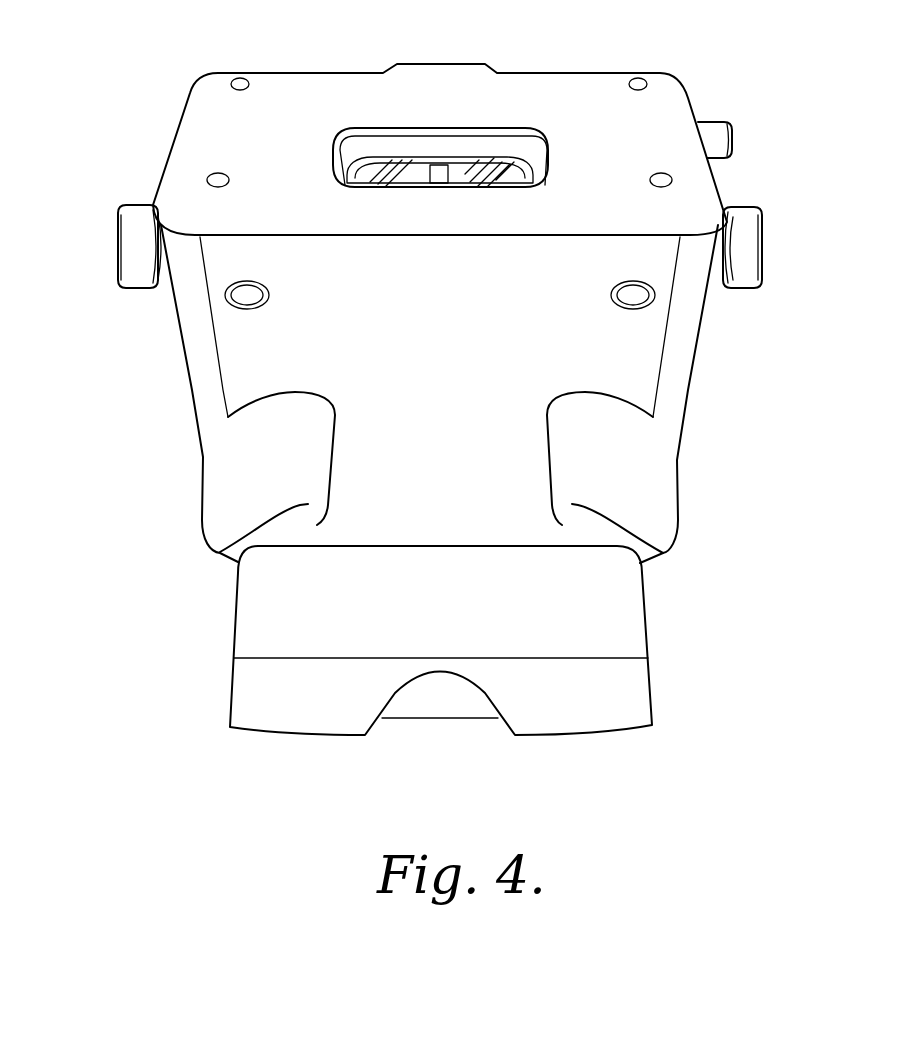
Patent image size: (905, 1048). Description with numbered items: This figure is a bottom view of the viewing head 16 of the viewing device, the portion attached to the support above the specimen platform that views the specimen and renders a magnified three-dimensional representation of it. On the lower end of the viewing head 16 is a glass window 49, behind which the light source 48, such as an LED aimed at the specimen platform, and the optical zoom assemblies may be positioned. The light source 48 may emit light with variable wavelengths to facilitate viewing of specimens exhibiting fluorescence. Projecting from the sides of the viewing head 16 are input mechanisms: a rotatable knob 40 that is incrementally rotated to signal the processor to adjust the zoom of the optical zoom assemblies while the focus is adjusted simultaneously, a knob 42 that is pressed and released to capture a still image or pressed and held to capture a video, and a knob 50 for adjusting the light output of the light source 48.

The viewing head 16 is at (707, 437).
The rotatable knob 40 is at (748, 240).
The knob 42 is at (132, 243).
The light source 48 is at (443, 180).
The glass window 49 is at (363, 145).
The knob 50 is at (713, 128).